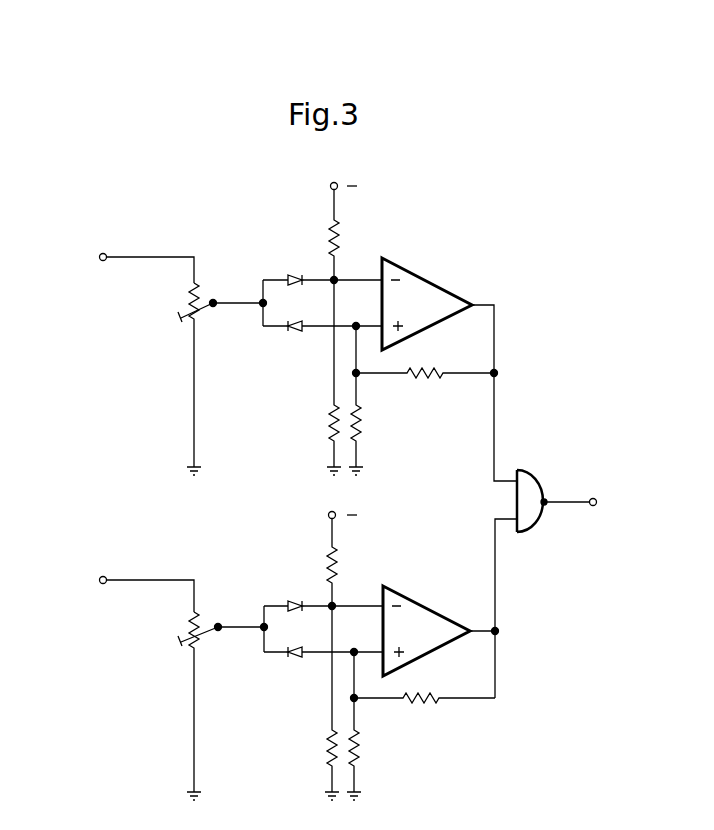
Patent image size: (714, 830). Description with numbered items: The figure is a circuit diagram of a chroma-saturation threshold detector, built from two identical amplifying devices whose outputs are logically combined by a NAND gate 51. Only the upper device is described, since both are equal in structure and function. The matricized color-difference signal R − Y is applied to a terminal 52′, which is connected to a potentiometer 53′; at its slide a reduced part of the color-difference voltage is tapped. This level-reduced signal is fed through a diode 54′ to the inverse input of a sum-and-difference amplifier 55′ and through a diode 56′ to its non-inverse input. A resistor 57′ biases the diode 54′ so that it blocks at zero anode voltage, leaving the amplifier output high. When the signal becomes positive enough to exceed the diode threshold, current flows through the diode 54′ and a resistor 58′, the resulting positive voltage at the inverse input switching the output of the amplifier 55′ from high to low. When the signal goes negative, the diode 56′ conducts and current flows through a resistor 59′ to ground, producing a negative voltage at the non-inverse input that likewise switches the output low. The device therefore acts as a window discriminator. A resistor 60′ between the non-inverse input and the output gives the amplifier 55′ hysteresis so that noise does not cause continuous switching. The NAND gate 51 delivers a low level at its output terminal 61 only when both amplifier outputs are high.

The terminal 52′ is at (125, 251).
The potentiometer 53′ is at (206, 379).
The diode 54′ is at (322, 262).
The sum-and-difference amplifier 55′ is at (425, 295).
The diode 56′ is at (322, 345).
The resistor 57′ is at (357, 232).
The resistor 58′ is at (328, 427).
The resistor 59′ is at (360, 420).
The resistor 60′ is at (436, 378).
The NAND gate 51 is at (528, 486).
The output terminal 61 is at (590, 503).